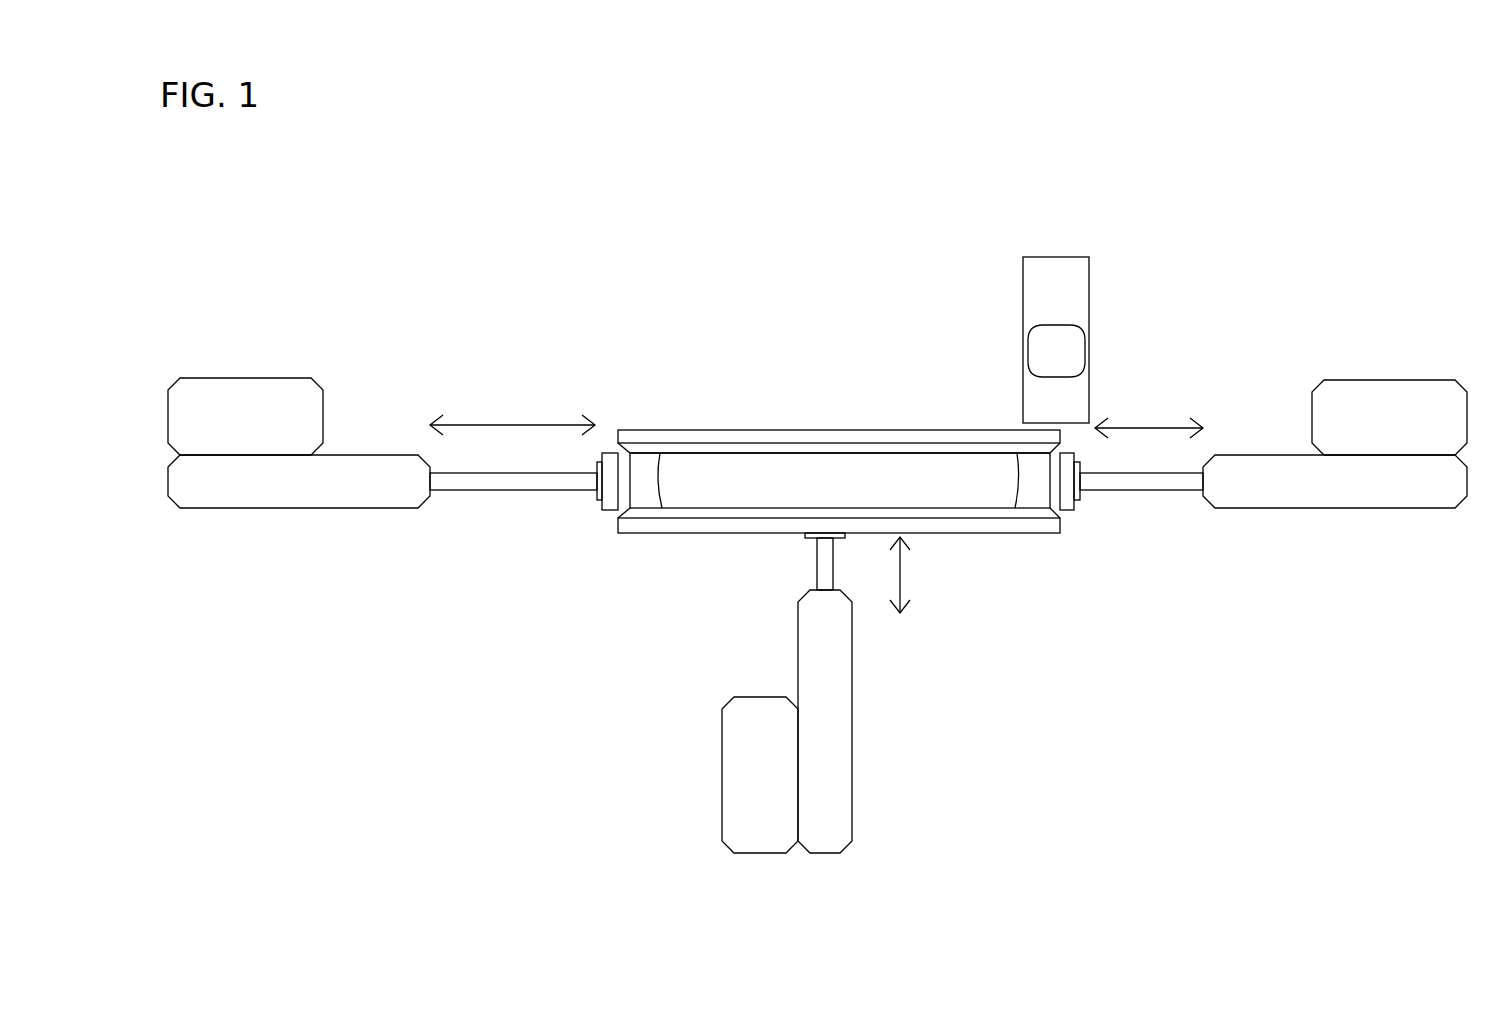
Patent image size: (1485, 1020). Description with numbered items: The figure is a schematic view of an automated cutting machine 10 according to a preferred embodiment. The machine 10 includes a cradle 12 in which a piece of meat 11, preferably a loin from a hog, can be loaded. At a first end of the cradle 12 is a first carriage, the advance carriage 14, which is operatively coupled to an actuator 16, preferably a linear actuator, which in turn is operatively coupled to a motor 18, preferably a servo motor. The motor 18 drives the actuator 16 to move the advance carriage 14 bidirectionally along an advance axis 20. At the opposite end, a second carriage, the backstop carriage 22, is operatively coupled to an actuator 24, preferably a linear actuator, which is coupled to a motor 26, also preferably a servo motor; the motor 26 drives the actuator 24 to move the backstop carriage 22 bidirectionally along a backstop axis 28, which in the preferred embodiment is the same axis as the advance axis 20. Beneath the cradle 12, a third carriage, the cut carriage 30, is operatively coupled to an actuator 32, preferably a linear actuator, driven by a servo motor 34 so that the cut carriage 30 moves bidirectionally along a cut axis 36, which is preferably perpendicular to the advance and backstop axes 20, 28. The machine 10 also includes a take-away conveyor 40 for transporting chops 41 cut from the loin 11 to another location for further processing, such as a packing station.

The automated cutting machine 10 is at (690, 307).
The piece of meat 11 is at (770, 480).
The cradle 12 is at (688, 427).
The advance carriage 14 is at (607, 511).
The actuator 16 is at (383, 509).
The motor 18 is at (228, 376).
The advance axis 20 is at (499, 417).
The backstop carriage 22 is at (1072, 511).
The actuator 24 is at (1420, 508).
The motor 26 is at (1427, 379).
The backstop axis 28 is at (1145, 423).
The cut carriage 30 is at (805, 540).
The actuator 32 is at (852, 730).
The servo motor 34 is at (720, 768).
The cut axis 36 is at (900, 597).
The take-away conveyor 40 is at (1090, 288).
The chops 41 is at (1082, 345).